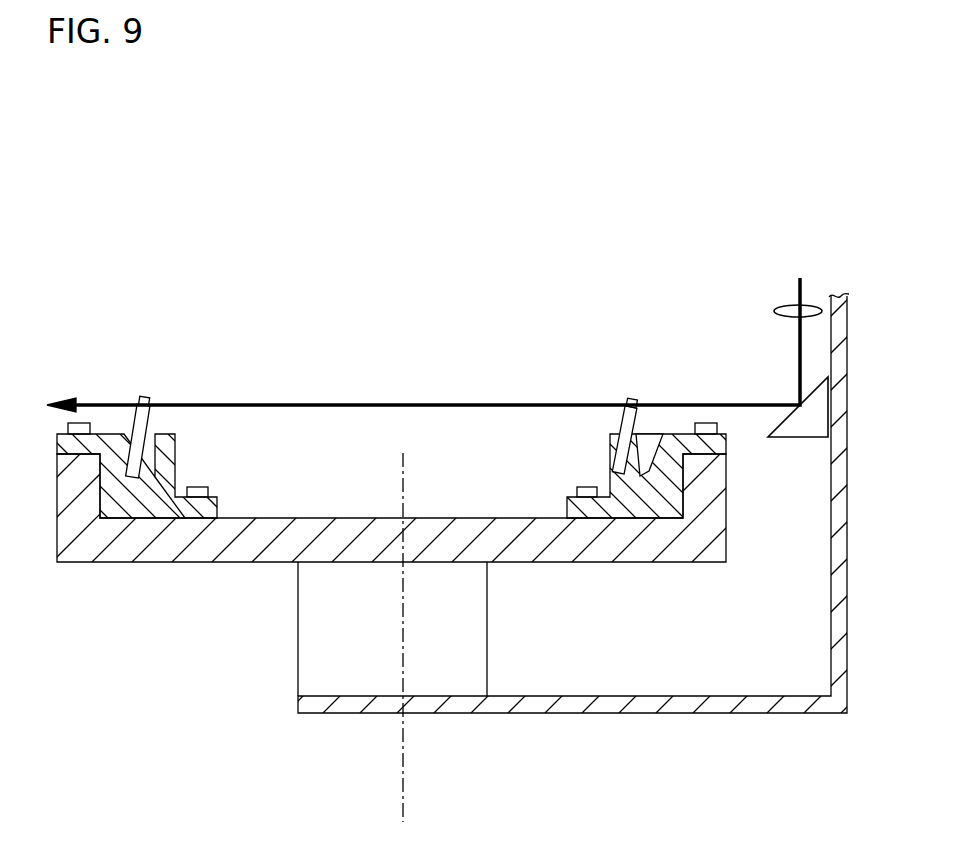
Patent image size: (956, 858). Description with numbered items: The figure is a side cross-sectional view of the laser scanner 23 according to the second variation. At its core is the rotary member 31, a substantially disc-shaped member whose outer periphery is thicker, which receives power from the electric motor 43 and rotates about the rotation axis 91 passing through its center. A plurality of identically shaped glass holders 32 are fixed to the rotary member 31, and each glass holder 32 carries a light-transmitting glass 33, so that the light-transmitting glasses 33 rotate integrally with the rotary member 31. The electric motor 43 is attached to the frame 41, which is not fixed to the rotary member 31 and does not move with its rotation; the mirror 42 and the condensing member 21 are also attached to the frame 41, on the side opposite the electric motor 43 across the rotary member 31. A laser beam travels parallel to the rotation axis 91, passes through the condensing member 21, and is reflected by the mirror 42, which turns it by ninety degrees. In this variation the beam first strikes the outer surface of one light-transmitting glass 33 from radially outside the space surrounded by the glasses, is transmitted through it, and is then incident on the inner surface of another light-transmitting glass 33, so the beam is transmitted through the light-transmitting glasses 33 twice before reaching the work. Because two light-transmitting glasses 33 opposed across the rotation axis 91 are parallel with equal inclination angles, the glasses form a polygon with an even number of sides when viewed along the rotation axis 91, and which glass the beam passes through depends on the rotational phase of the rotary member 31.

The condensing member 21 is at (790, 305).
The laser scanner 23 is at (130, 221).
The rotary member 31 is at (213, 548).
The glass holder 32 is at (204, 459).
The light-transmitting glass 33 is at (142, 396).
The frame 41 is at (837, 618).
The mirror 42 is at (797, 432).
The electric motor 43 is at (472, 635).
The rotation axis 91 is at (403, 775).